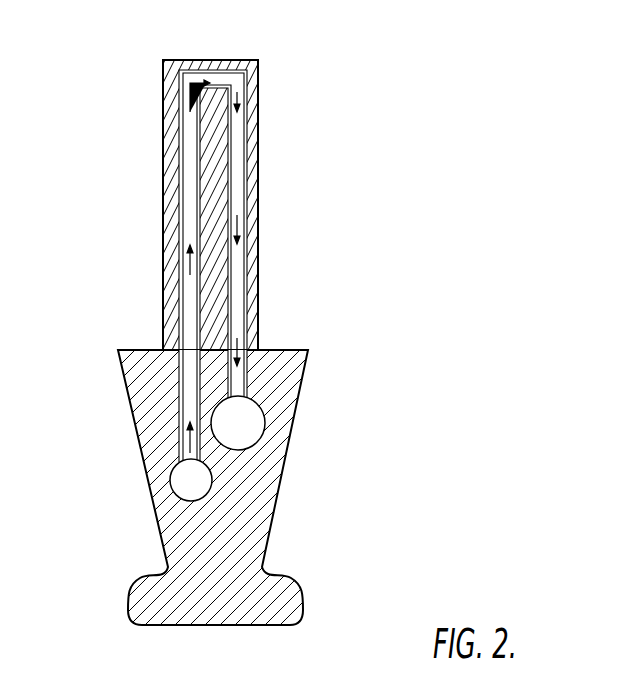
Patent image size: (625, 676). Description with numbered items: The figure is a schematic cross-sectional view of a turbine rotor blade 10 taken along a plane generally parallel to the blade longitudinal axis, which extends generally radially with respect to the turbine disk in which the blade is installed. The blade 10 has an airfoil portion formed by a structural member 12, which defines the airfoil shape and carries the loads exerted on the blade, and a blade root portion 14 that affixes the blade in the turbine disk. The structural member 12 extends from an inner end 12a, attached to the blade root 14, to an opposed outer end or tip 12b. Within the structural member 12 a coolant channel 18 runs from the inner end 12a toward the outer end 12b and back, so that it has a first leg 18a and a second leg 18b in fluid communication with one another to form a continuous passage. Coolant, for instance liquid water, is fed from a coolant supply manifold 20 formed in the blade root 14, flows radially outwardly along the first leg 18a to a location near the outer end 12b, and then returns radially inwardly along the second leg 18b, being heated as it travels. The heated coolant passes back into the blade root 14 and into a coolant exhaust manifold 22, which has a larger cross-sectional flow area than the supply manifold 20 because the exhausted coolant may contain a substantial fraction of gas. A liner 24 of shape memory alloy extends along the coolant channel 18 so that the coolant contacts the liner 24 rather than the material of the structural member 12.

The blade 10 is at (322, 277).
The structural member 12 is at (258, 226).
The inner end 12a is at (260, 348).
The outer end 12b is at (205, 60).
The blade root portion 14 is at (248, 526).
The coolant channel 18 is at (190, 313).
The first leg 18a is at (190, 343).
The second leg 18b is at (242, 319).
The coolant supply manifold 20 is at (190, 483).
The coolant exhaust manifold 22 is at (248, 433).
The liner 24 is at (257, 132).